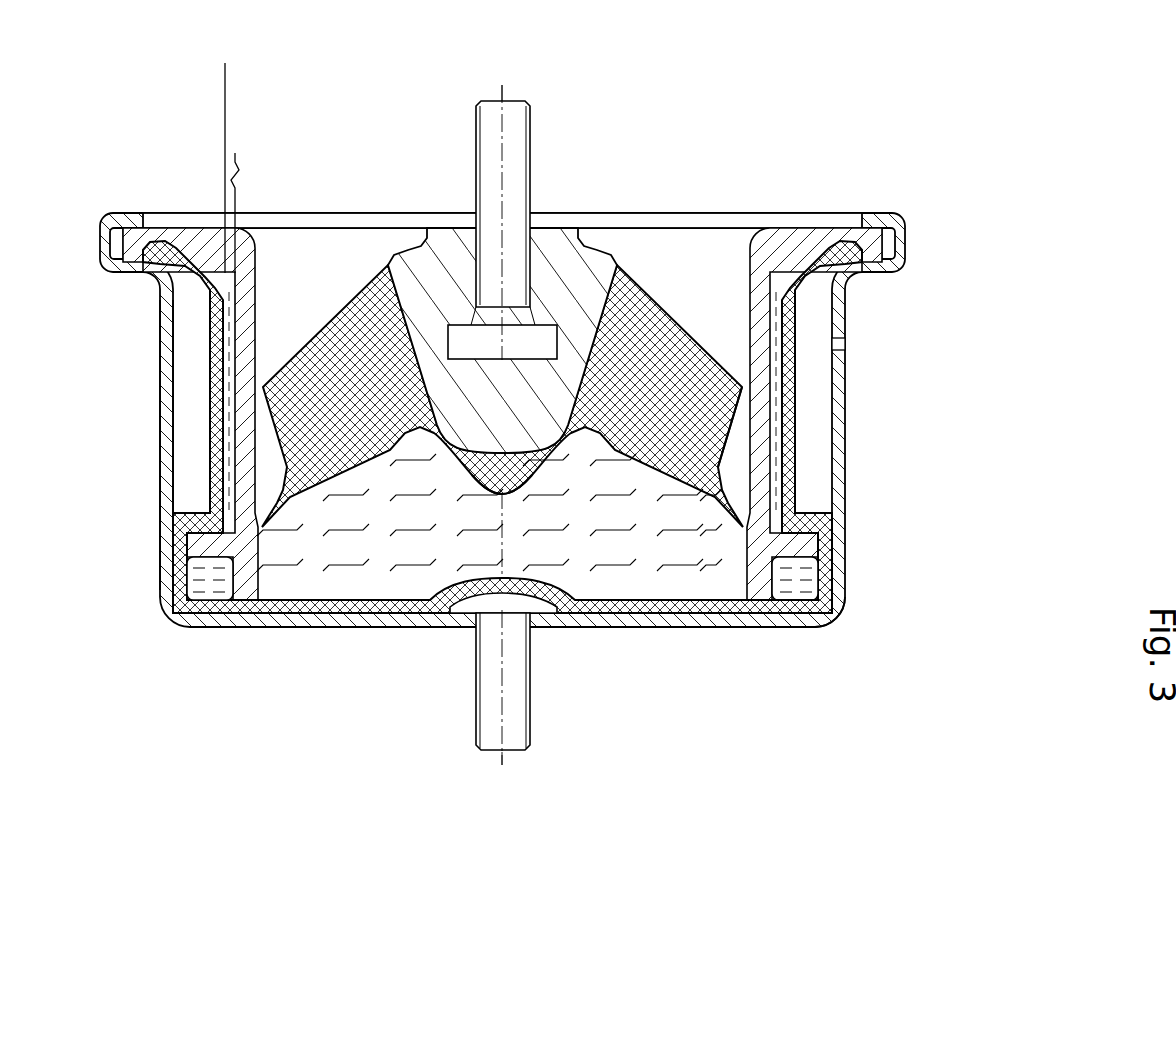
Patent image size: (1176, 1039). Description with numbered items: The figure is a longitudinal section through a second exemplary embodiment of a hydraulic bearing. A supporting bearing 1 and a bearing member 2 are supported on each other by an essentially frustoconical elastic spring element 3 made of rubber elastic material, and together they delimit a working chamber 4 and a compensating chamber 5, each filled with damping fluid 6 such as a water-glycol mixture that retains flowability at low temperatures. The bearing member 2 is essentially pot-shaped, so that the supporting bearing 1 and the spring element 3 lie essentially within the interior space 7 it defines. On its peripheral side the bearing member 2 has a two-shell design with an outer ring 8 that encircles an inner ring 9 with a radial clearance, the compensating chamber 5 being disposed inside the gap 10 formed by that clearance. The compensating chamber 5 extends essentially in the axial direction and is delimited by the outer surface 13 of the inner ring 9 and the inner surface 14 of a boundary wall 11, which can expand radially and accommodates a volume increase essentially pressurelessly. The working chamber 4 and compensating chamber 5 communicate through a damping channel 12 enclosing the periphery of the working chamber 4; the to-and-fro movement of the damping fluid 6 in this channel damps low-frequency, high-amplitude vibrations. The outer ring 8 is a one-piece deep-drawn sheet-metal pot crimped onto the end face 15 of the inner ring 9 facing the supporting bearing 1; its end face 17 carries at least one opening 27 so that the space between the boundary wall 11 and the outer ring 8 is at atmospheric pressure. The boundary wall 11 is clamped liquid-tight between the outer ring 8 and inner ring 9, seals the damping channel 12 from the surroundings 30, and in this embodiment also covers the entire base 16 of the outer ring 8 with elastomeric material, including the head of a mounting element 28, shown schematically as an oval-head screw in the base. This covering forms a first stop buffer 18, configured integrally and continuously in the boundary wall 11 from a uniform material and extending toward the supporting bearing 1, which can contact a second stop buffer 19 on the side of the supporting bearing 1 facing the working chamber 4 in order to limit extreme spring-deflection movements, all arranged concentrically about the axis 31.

The supporting bearing 1 is at (545, 262).
The bearing member 2 is at (305, 619).
The elastic spring element 3 is at (652, 268).
The working chamber 4 is at (637, 558).
The compensating chamber 5 is at (793, 476).
The damping fluid 6 is at (402, 572).
The interior space 7 is at (727, 337).
The outer ring 8 is at (166, 386).
The inner ring 9 is at (251, 300).
The gap 10 is at (186, 475).
The boundary wall 11 is at (214, 377).
The damping channel 12 is at (830, 591).
The outer surface of inner ring 13 is at (236, 153).
The inner surface of boundary wall 14 is at (235, 93).
The end face of inner ring 15 is at (778, 228).
The base of outer ring 16 is at (590, 606).
The end face of outer ring 17 is at (790, 631).
The first stop buffer 18 is at (525, 618).
The second stop buffer 19 is at (500, 495).
The opening 27 is at (848, 340).
The mounting element 28 is at (495, 727).
The surroundings 30 is at (952, 397).
The axis 31 is at (505, 84).